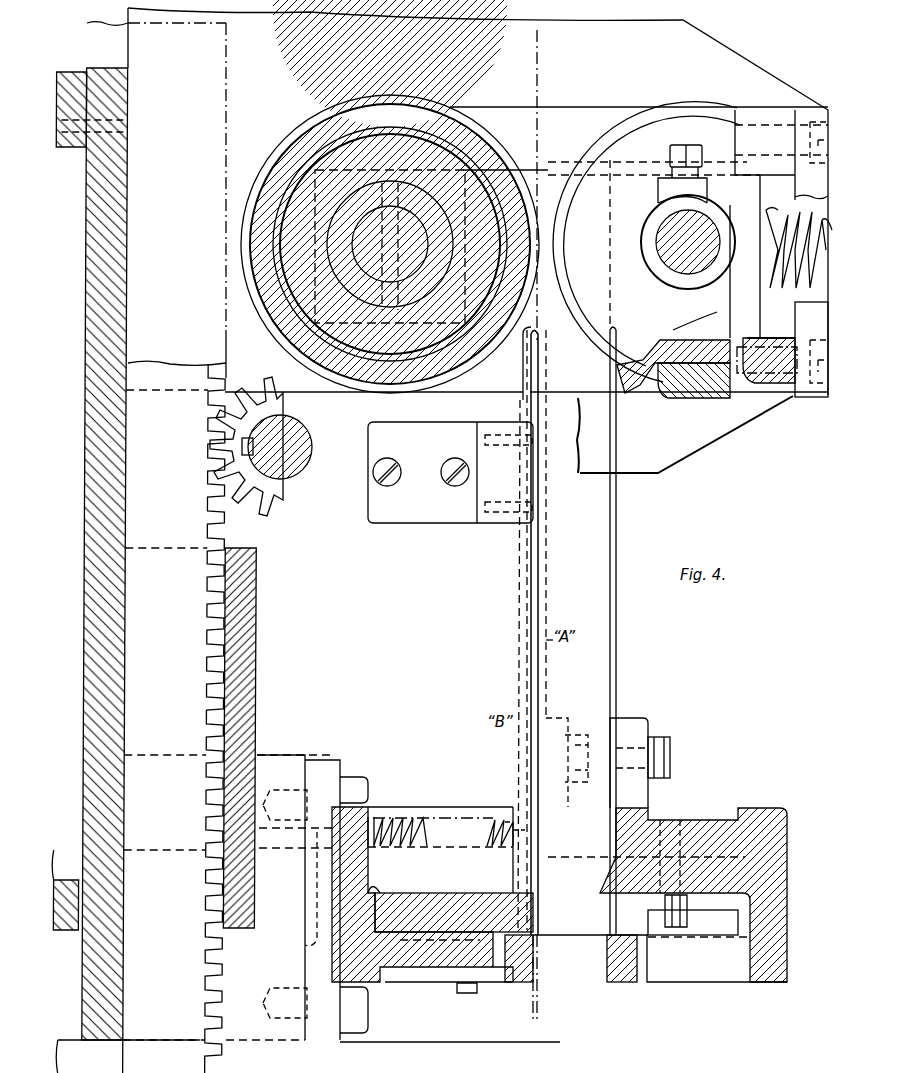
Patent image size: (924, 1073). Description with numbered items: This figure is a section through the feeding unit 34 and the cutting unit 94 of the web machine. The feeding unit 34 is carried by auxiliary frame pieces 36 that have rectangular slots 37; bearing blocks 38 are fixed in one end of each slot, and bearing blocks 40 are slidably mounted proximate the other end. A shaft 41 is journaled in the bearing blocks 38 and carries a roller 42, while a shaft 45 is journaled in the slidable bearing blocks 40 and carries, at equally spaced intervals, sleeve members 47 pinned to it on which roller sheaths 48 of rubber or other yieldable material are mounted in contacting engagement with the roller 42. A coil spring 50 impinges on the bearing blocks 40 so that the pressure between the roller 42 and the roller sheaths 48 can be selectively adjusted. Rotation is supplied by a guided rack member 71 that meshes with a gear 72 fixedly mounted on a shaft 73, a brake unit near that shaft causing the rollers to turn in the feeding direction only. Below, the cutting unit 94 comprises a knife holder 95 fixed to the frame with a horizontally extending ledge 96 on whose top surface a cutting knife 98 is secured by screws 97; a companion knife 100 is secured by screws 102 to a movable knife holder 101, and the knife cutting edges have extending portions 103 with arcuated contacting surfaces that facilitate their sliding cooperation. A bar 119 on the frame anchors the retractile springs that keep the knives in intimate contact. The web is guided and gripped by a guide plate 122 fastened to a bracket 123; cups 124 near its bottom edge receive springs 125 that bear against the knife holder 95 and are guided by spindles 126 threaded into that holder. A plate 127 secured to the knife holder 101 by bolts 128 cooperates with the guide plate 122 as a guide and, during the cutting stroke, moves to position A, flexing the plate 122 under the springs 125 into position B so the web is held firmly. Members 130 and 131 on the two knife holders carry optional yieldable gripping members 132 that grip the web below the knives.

The feeding unit 34 is at (457, 240).
The auxiliary frame pieces 36 is at (765, 78).
The rectangular slots 37 is at (781, 170).
The bearing blocks 38 is at (362, 178).
The bearing blocks 40 is at (760, 313).
The shaft 41 is at (366, 268).
The roller 42 is at (436, 104).
The shaft 45 is at (660, 268).
The sleeve members 47 is at (655, 378).
The roller sheaths 48 is at (675, 398).
The coil spring 50 is at (820, 255).
The rack member 71 is at (190, 719).
The gear 72 is at (267, 510).
The shaft 73 is at (312, 447).
The cutting unit 94 is at (665, 763).
The knife holder 95 is at (365, 872).
The ledge 96 is at (407, 962).
The screws 97 is at (442, 968).
The cutting knife 98 is at (482, 893).
The companion knife 100 is at (727, 890).
The movable knife holder 101 is at (788, 873).
The screws 102 is at (680, 822).
The extending portions 103 is at (596, 886).
The bar 119 is at (76, 140).
The guide plate 122 is at (531, 618).
The bracket 123 is at (424, 524).
The cups 124 is at (510, 815).
The springs 125 is at (418, 815).
The spindles 126 is at (390, 812).
The plate 127 is at (630, 682).
The bolts 128 is at (672, 756).
The member 130 is at (497, 975).
The member 131 is at (650, 980).
The gripping members 132 is at (617, 980).